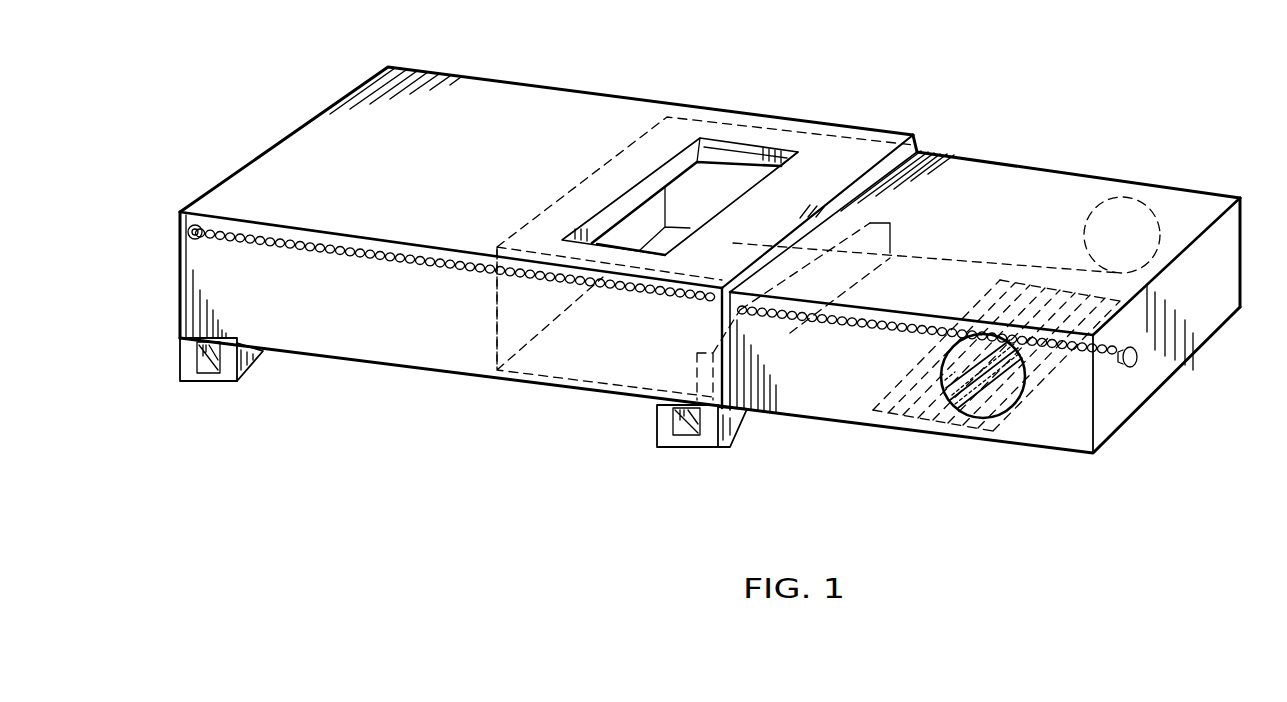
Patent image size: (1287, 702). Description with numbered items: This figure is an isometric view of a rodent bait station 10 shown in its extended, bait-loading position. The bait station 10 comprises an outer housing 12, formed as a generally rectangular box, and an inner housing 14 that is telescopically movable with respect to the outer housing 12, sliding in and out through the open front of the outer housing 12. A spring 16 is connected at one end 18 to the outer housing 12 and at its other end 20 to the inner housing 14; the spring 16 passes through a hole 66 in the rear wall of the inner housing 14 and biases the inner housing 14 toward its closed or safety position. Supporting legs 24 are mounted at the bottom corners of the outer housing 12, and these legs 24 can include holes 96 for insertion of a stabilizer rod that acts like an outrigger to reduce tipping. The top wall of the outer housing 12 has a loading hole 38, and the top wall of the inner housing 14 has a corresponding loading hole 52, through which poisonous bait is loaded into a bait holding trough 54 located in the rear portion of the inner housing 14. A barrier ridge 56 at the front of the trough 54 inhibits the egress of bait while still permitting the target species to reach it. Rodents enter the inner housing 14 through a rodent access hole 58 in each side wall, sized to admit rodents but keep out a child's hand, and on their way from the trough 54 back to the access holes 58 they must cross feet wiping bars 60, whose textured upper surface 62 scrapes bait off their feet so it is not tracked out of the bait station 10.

The rodent bait station 10 is at (1015, 67).
The outer housing 12 is at (528, 88).
The inner housing 14 is at (1016, 163).
The spring 16 is at (324, 236).
The one end of spring 18 is at (180, 243).
The other end of spring 20 is at (1135, 367).
The supporting legs 24 is at (245, 380).
The loading hole 38 is at (770, 152).
The loading hole 52 is at (713, 155).
The bait holding trough 54 is at (560, 376).
The barrier ridge 56 is at (760, 335).
The rodent access hole 58 is at (1150, 210).
The feet wiping bars 60 is at (925, 415).
The textured upper surface 62 is at (968, 372).
The hole 66 is at (495, 306).
The holes 96 is at (205, 372).